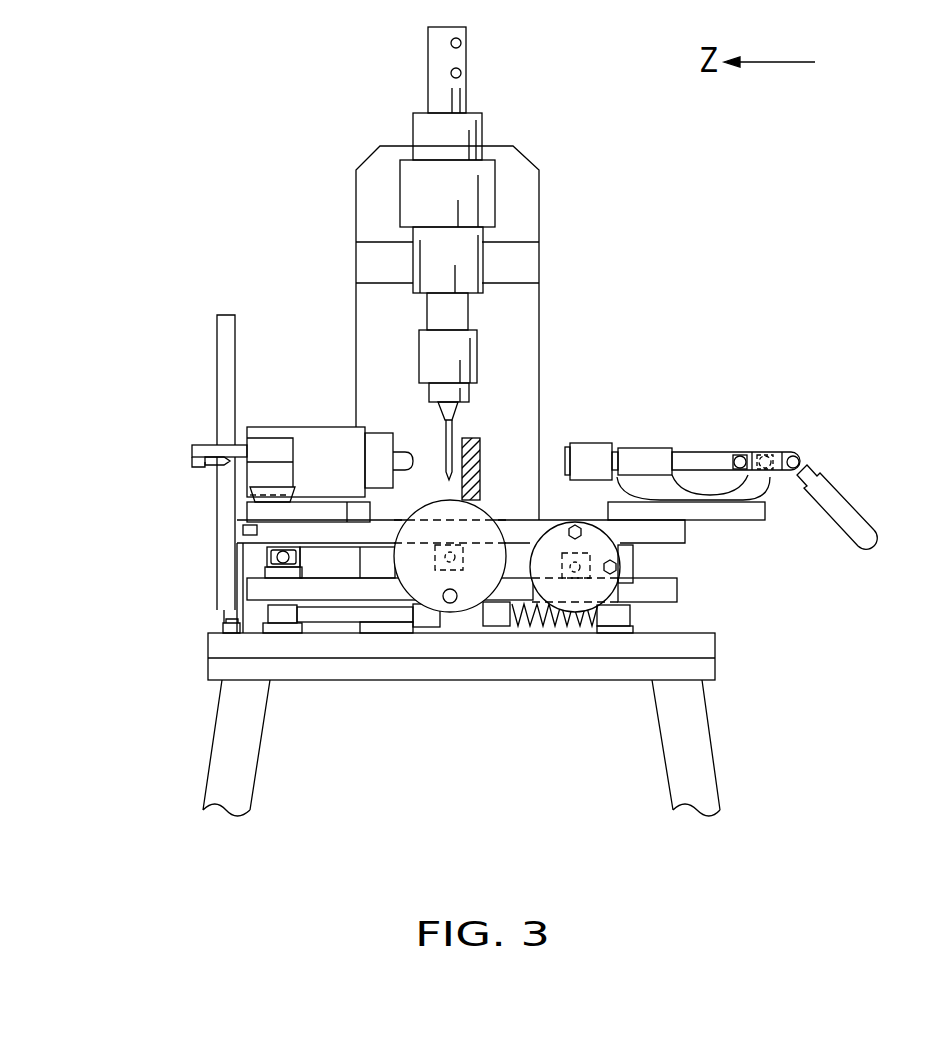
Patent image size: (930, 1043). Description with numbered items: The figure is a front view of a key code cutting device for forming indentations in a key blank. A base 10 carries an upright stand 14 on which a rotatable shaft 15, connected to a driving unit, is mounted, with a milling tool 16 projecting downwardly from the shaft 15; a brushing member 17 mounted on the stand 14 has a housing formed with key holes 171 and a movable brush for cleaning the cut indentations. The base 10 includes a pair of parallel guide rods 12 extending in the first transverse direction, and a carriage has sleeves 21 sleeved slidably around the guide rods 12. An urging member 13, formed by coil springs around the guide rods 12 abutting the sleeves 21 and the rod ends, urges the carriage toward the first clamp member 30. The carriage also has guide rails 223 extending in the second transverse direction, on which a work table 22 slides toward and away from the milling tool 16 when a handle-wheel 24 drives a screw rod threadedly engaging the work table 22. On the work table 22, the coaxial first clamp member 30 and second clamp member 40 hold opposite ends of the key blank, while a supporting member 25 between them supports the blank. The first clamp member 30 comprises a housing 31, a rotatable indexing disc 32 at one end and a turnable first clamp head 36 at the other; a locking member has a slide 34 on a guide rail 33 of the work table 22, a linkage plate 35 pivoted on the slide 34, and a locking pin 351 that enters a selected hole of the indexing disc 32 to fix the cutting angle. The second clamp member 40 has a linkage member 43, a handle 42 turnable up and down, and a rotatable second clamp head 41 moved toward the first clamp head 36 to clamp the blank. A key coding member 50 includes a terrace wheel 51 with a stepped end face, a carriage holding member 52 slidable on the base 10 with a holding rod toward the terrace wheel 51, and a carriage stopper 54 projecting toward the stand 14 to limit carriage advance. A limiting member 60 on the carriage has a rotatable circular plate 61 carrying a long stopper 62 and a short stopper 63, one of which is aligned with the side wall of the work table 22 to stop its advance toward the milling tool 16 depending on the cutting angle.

The base 10 is at (724, 650).
The guide rods 12 is at (398, 619).
The urging member 13 is at (553, 618).
The stand 14 is at (523, 378).
The rotatable shaft 15 is at (471, 346).
The milling tool 16 is at (452, 432).
The brushing member 17 is at (430, 40).
The key holes 171 is at (460, 43).
The sleeves 21 is at (503, 625).
The work table 22 is at (262, 538).
The guide rails 223 is at (283, 562).
The handle-wheel 24 is at (472, 598).
The supporting member 25 is at (488, 470).
The first clamp member 30 is at (165, 435).
The housing 31 is at (273, 431).
The indexing disc 32 is at (221, 328).
The guide rail 33 is at (255, 497).
The slide 34 is at (255, 478).
The linkage plate 35 is at (200, 447).
The locking pin 351 is at (195, 466).
The first clamp head 36 is at (405, 452).
The second clamp member 40 is at (732, 441).
The second clamp head 41 is at (603, 442).
The handle 42 is at (838, 490).
The linkage member 43 is at (740, 454).
The key coding member 50 is at (173, 596).
The terrace wheel 51 is at (228, 462).
The carriage holding member 52 is at (224, 614).
The carriage stopper 54 is at (320, 520).
The limiting member 60 is at (634, 588).
The circular plate 61 is at (603, 594).
The long stopper 62 is at (577, 526).
The short stopper 63 is at (617, 566).